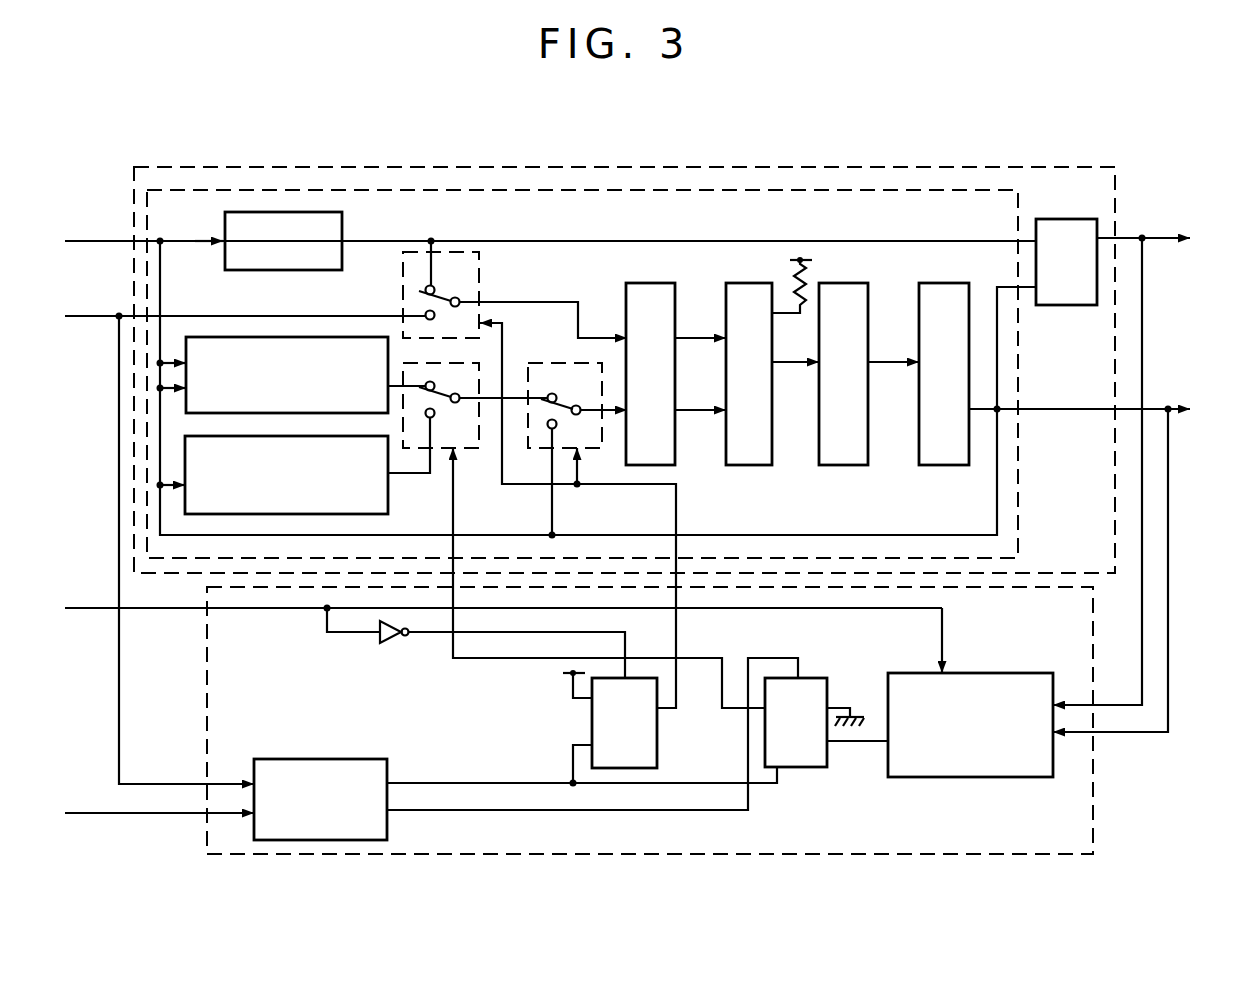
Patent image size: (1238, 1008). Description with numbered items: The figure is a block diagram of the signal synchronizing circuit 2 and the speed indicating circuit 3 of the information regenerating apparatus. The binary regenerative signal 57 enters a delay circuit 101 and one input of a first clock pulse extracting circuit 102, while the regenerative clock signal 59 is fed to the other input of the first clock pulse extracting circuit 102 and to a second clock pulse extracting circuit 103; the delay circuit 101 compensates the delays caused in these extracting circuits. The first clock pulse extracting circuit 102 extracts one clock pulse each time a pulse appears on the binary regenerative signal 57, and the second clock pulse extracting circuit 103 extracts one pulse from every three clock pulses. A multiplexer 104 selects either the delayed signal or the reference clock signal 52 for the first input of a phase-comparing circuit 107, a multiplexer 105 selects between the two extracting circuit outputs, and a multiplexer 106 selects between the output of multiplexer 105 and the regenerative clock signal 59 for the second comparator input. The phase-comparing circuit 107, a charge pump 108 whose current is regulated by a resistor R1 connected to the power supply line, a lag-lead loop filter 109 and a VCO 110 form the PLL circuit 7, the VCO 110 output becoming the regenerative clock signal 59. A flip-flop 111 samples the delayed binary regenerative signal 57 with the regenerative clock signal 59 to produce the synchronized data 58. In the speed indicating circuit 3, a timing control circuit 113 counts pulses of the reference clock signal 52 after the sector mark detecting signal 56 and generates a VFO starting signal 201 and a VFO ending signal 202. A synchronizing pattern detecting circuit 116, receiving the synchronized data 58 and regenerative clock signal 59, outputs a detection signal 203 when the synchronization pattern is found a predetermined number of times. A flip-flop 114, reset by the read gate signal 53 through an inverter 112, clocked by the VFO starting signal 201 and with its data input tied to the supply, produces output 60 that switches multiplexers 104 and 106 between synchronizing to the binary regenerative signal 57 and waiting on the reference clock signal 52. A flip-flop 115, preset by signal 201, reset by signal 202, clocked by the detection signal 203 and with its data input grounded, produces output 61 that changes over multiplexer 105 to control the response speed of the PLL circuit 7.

The signal synchronizing circuit 2 is at (362, 167).
The PLL circuit 7 is at (958, 186).
The speed indicating circuit 3 is at (730, 855).
The binary regenerative signal 57 is at (93, 233).
The reference clock signal 52 is at (93, 322).
The read gate signal 53 is at (90, 615).
The sector mark detecting signal 56 is at (112, 818).
The synchronized data 58 is at (1157, 232).
The regenerative clock signal 59 is at (1165, 401).
The delay circuit 101 is at (300, 271).
The first clock pulse extracting circuit 102 is at (260, 337).
The second clock pulse extracting circuit 103 is at (392, 485).
The multiplexer 104 is at (481, 265).
The multiplexer 105 is at (470, 452).
The multiplexer 106 is at (540, 363).
The phase-comparing circuit 107 is at (640, 295).
The charge pump 108 is at (736, 295).
The resistor R1 is at (781, 280).
The loop filter 109 is at (838, 295).
The VCO 110 is at (945, 466).
The flip-flop 111 is at (1068, 307).
The inverter 112 is at (375, 645).
The output 60 is at (678, 632).
The output 61 is at (480, 662).
The timing control circuit 113 is at (308, 759).
The VFO starting signal 201 is at (511, 778).
The VFO ending signal 202 is at (697, 812).
The flip-flop 114 is at (660, 752).
The flip-flop 115 is at (810, 770).
The detection signal 203 is at (872, 749).
The synchronizing pattern detecting circuit 116 is at (1018, 778).